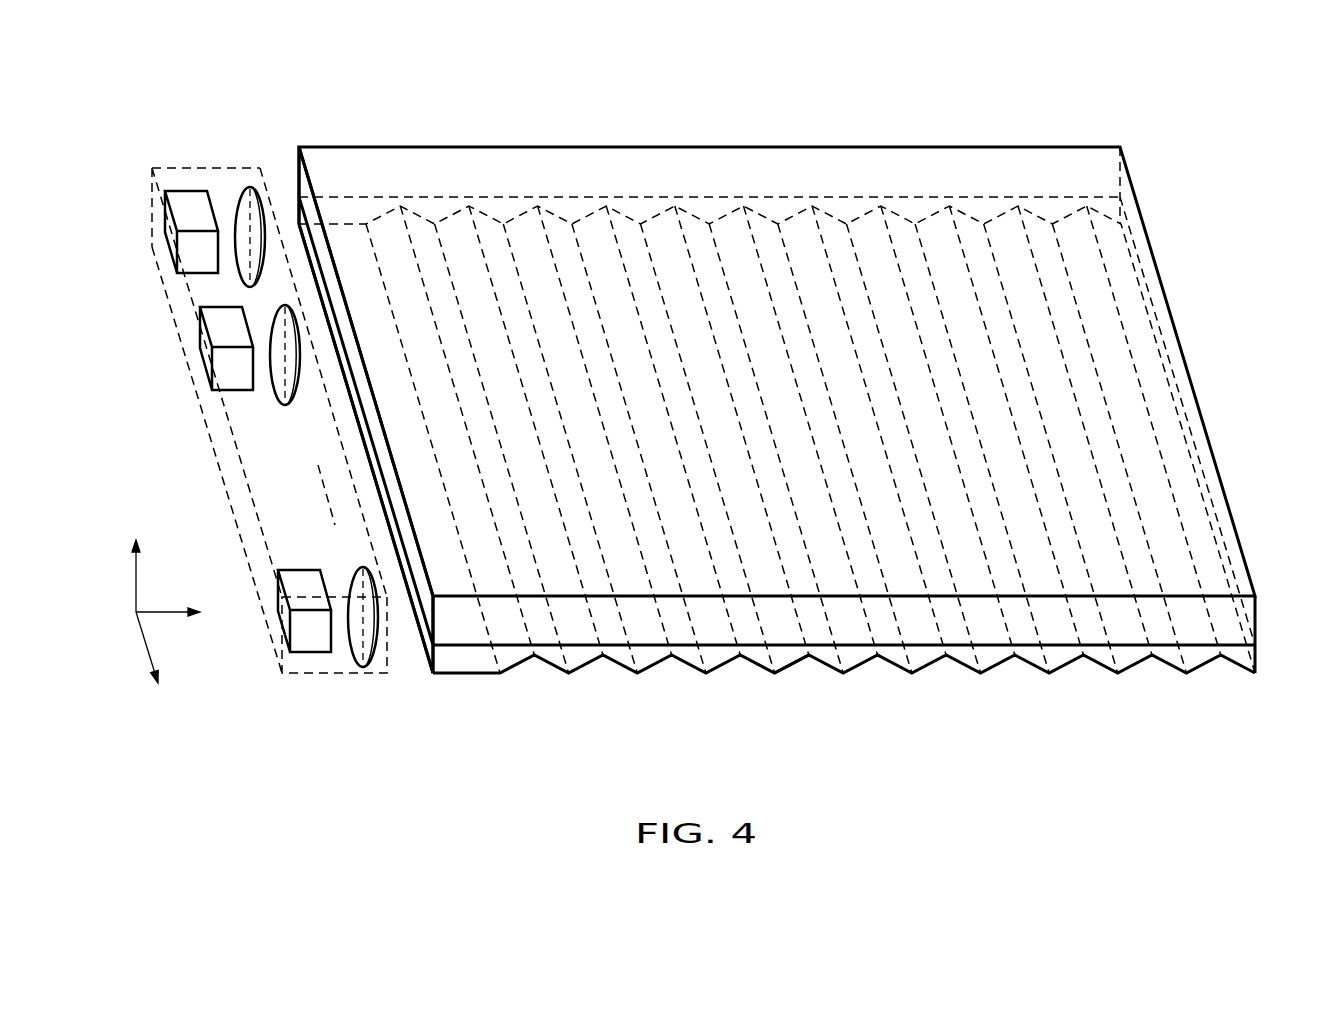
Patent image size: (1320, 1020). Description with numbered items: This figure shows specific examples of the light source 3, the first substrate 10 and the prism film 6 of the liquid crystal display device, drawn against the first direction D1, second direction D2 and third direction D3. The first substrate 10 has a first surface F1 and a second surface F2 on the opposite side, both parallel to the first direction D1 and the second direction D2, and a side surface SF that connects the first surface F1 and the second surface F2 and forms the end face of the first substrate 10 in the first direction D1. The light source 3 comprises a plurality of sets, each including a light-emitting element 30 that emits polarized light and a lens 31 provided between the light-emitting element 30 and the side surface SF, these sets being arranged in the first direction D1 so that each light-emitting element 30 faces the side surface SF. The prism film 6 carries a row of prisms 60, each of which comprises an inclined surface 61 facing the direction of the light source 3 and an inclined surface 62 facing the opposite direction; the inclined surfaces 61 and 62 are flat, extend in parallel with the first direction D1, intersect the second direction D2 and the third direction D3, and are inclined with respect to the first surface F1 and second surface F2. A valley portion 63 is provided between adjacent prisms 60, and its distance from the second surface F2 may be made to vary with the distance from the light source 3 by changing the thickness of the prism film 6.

The first substrate 10 is at (913, 147).
The prism film 6 is at (462, 660).
The prism 60 is at (698, 698).
The inclined surface 61 is at (457, 227).
The inclined surface 62 is at (494, 232).
The valley portion 63 is at (798, 612).
The side surface SF is at (416, 590).
The first surface F1 is at (1178, 555).
The second surface F2 is at (1195, 629).
The light source 3 is at (152, 200).
The light-emitting element 30 is at (190, 200).
The lens 31 is at (251, 190).
The first direction D1 is at (157, 663).
The second direction D2 is at (188, 612).
The third direction D3 is at (137, 559).